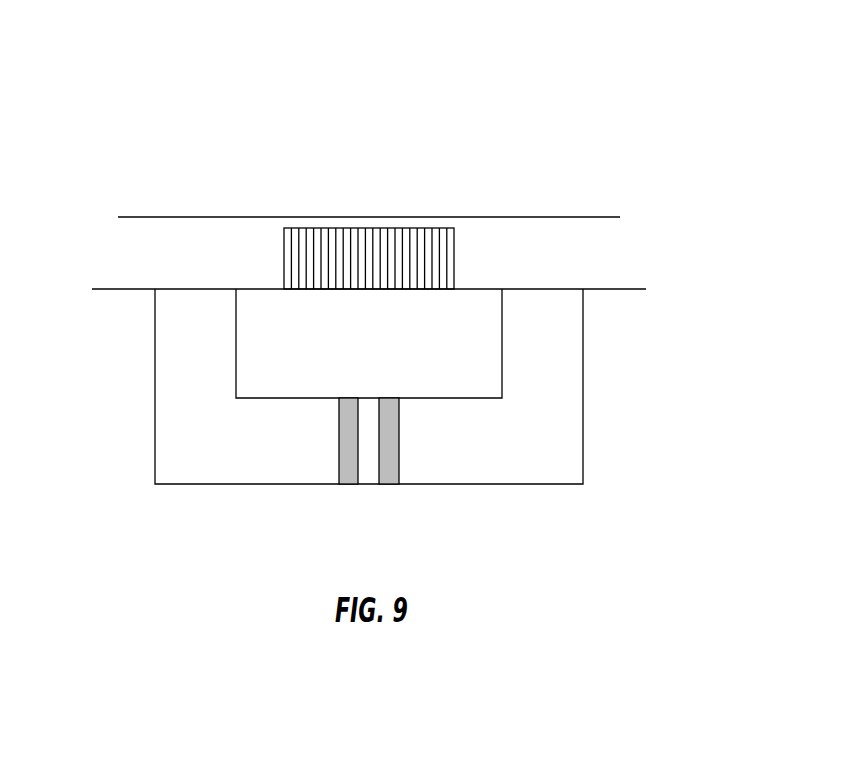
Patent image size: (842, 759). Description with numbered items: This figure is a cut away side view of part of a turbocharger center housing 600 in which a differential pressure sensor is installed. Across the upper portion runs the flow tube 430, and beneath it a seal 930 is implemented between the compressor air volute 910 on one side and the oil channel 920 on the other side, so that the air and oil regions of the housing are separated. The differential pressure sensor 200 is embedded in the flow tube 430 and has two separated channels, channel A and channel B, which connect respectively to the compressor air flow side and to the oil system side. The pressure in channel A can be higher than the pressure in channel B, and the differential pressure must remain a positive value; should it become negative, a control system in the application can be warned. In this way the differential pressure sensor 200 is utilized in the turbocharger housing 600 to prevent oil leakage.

The turbocharger center housing 600 is at (127, 52).
The flow tube 430 is at (514, 216).
The seal 930 is at (331, 227).
The differential pressure sensor 200 is at (451, 486).
The compressor air volute 910 is at (128, 255).
The oil channel 920 is at (600, 257).